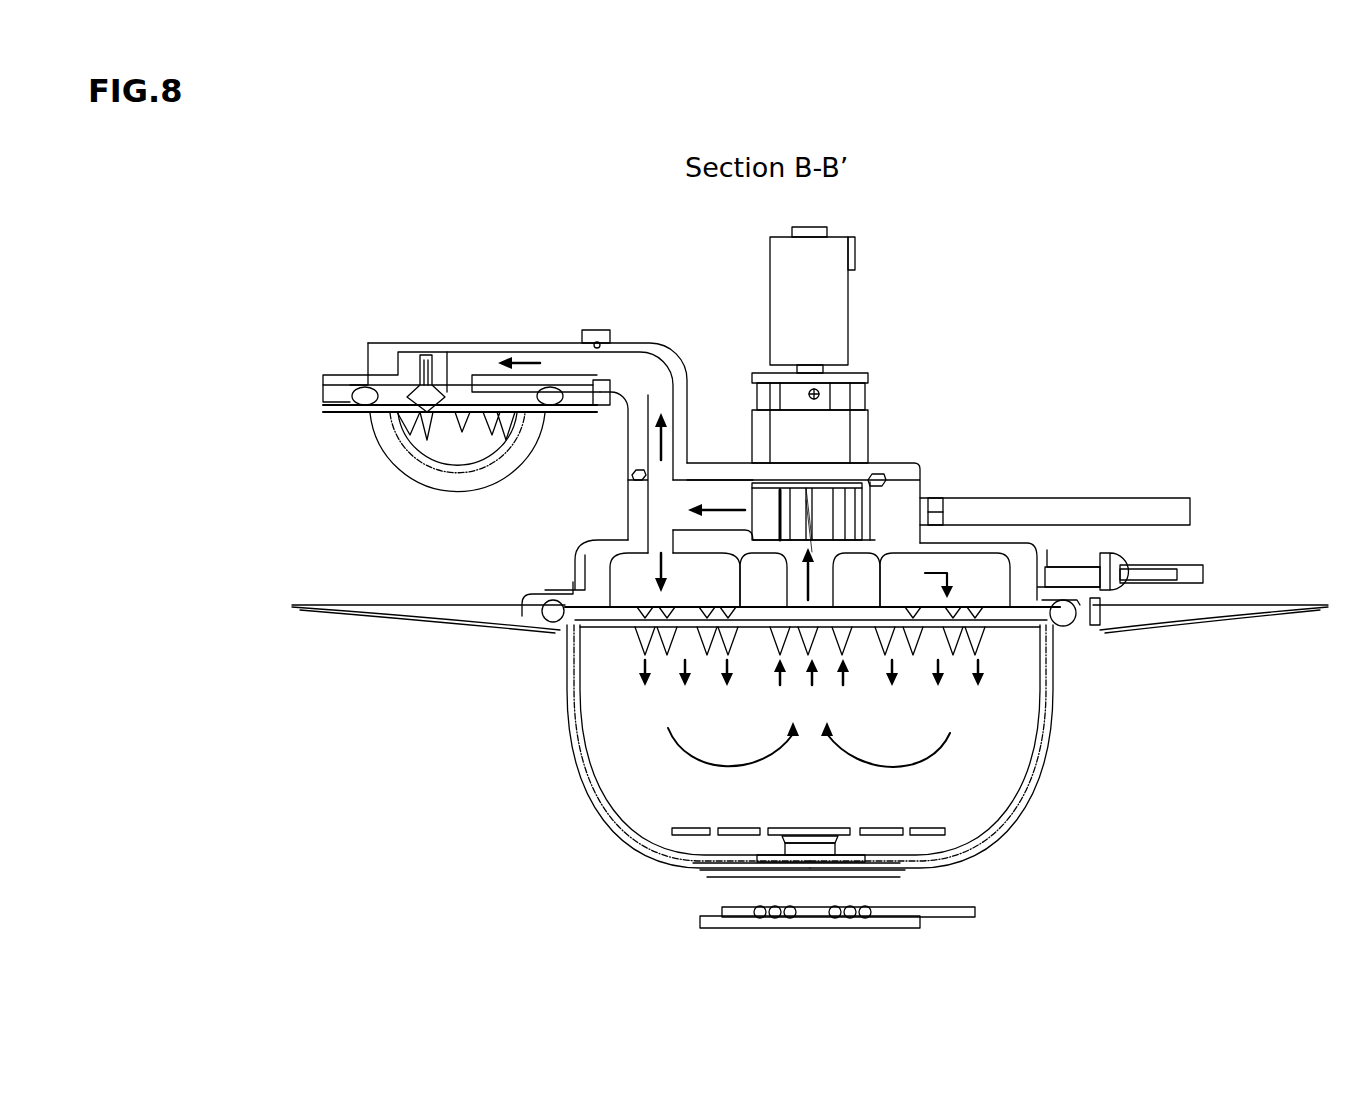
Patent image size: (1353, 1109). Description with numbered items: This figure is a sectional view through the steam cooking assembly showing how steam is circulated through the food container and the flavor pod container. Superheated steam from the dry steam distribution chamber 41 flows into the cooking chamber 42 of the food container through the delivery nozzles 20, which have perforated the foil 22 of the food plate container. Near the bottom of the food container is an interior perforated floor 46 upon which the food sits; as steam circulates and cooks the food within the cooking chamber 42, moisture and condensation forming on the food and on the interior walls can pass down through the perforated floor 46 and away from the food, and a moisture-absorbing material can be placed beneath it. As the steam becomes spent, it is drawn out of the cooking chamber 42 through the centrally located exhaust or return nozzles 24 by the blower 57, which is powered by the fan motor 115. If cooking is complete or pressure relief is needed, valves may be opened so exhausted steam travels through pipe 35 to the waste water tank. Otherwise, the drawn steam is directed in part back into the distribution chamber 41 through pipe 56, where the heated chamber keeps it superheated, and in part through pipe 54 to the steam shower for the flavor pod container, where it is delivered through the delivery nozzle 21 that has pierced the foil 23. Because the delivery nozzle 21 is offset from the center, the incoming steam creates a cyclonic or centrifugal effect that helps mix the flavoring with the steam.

The delivery nozzles 20 is at (645, 643).
The delivery nozzle 21 is at (440, 400).
The foil 22 is at (608, 627).
The foil 23 is at (437, 412).
The exhaust or return nozzles 24 is at (808, 647).
The pipe 35 is at (1097, 510).
The dry steam distribution chamber 41 is at (647, 585).
The cooking chamber 42 is at (918, 732).
The interior perforated floor 46 is at (730, 837).
The pipe 54 is at (652, 375).
The pipe 56 is at (662, 542).
The blower 57 is at (828, 523).
The fan motor 115 is at (820, 315).